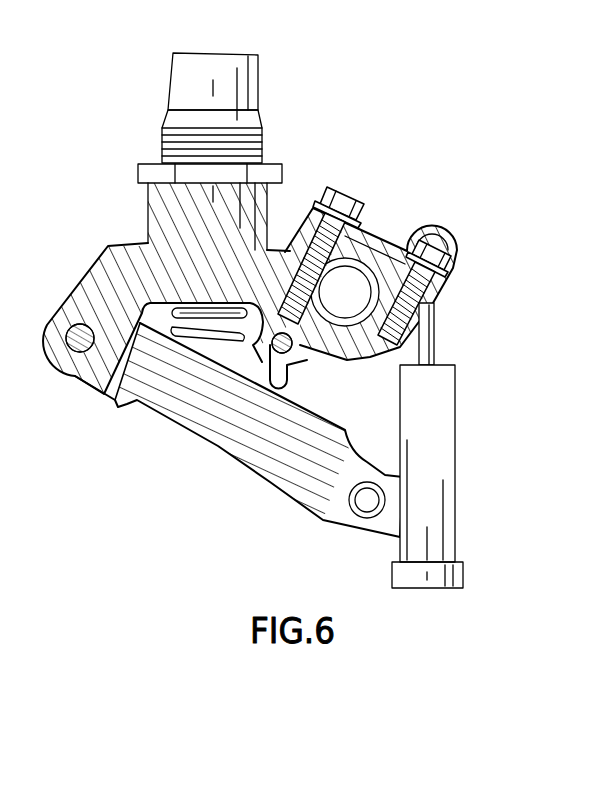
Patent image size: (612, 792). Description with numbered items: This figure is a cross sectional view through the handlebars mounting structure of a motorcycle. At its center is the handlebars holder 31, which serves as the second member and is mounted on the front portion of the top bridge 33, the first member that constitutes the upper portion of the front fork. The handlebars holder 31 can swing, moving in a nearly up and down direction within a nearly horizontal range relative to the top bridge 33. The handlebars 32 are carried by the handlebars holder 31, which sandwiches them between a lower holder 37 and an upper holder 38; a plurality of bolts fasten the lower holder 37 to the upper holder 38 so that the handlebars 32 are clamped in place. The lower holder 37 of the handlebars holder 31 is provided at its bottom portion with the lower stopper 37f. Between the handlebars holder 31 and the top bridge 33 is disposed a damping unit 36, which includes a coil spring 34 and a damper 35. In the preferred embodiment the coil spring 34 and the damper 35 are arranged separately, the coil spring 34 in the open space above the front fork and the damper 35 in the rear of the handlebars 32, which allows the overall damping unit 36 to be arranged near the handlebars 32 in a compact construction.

The handlebars holder 31 is at (378, 224).
The handlebars 32 is at (436, 301).
The top bridge 33 is at (157, 412).
The coil spring 34 is at (99, 262).
The damper 35 is at (455, 492).
The damping unit 36 is at (462, 410).
The lower holder 37 is at (110, 245).
The lower stopper 37f is at (255, 348).
The upper holder 38 is at (322, 201).